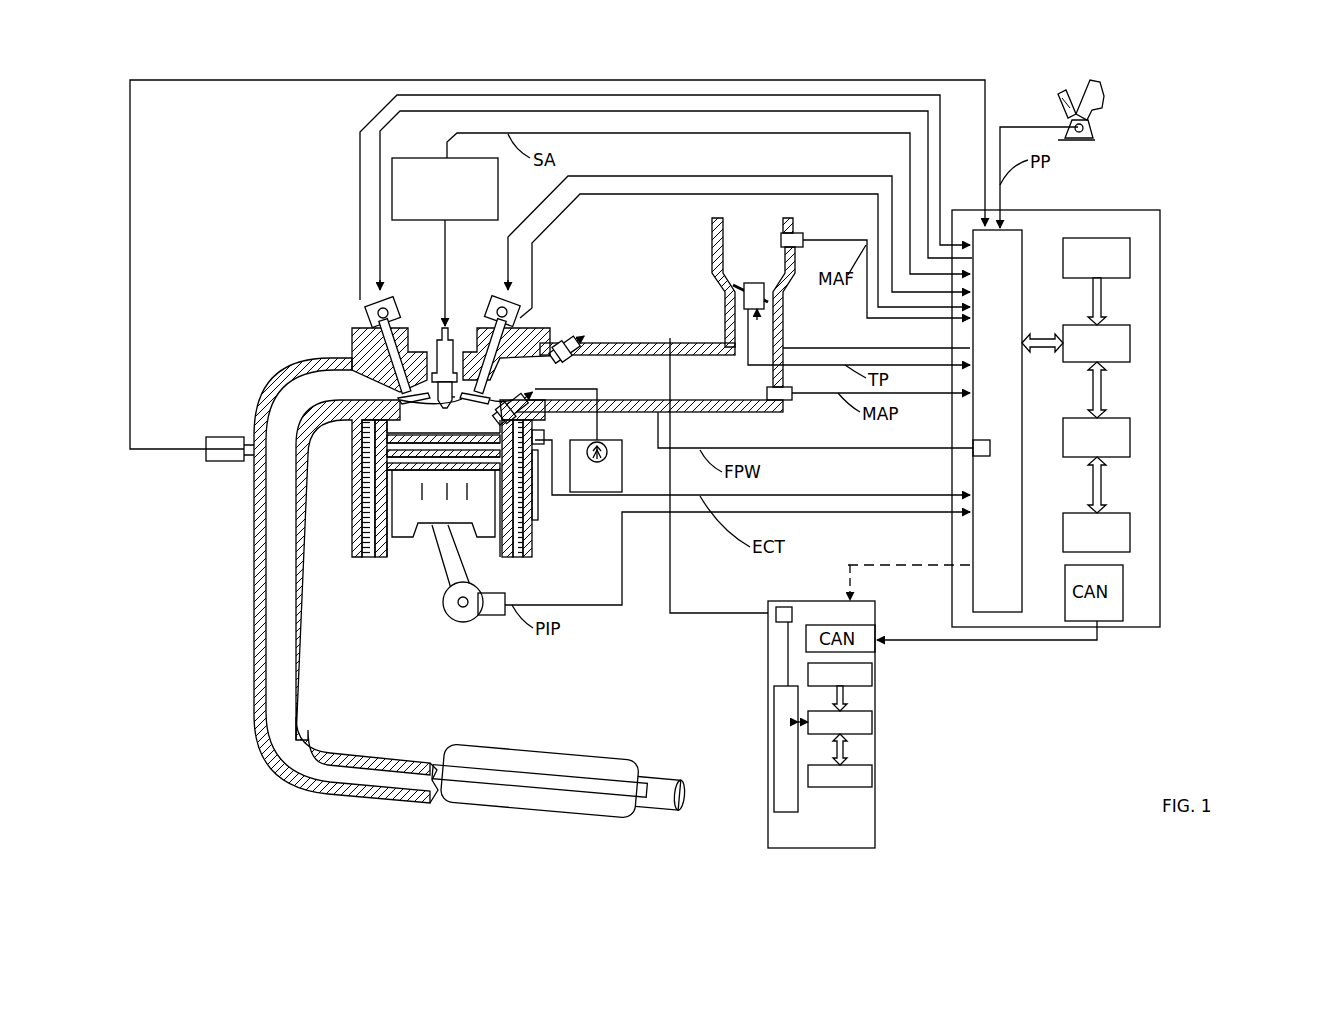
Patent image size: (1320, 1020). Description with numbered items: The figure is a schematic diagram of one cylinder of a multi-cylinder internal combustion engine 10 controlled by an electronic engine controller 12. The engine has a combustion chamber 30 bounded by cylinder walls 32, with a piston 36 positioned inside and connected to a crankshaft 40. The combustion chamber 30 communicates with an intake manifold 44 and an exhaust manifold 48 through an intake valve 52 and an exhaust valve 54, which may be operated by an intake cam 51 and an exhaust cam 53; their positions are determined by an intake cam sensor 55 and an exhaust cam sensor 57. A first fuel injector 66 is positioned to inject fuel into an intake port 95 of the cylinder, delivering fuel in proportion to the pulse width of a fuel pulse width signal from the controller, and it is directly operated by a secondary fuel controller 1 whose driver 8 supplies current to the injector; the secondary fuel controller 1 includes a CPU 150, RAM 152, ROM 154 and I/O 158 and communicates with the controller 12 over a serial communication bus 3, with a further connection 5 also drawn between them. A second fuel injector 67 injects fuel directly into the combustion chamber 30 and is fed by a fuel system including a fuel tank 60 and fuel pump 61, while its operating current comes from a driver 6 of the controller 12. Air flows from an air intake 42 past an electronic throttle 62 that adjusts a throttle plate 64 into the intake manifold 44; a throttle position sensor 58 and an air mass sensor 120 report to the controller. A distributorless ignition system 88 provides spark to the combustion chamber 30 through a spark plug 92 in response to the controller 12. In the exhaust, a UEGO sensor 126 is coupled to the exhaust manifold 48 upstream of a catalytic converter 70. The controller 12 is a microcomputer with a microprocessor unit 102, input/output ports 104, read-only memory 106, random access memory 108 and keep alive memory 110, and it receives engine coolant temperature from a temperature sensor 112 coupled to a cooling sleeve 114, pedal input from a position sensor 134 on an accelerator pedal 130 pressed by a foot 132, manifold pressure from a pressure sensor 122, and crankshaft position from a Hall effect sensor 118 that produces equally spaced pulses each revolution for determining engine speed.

The internal combustion engine 10 is at (288, 285).
The electronic engine controller 12 is at (1160, 212).
The secondary fuel controller 1 is at (875, 848).
The serial communication bus 3 is at (975, 642).
The dashed connection 5 is at (908, 563).
The driver 6 is at (968, 455).
The driver 8 is at (776, 618).
The combustion chamber 30 is at (380, 508).
The cylinder walls 32 is at (385, 560).
The piston 36 is at (420, 540).
The crankshaft 40 is at (452, 618).
The air intake 42 is at (764, 260).
The intake manifold 44 is at (702, 390).
The exhaust manifold 48 is at (334, 395).
The intake cam 51 is at (500, 298).
The intake valve 52 is at (498, 385).
The exhaust cam 53 is at (390, 298).
The exhaust valve 54 is at (360, 370).
The intake cam sensor 55 is at (515, 318).
The exhaust cam sensor 57 is at (368, 308).
The throttle position sensor 58 is at (740, 312).
The fuel tank 60 is at (622, 465).
The fuel pump 61 is at (603, 443).
The electronic throttle 62 is at (768, 293).
The throttle plate 64 is at (744, 292).
The first fuel injector 66 is at (565, 338).
The second fuel injector 67 is at (580, 392).
The catalytic converter 70 is at (462, 752).
The distributorless ignition system 88 is at (400, 158).
The spark plug 92 is at (450, 340).
The intake port 95 is at (492, 398).
The microprocessor unit 102 is at (1130, 344).
The input/output ports 104 is at (1022, 238).
The read-only memory 106 is at (1130, 256).
The random access memory 108 is at (1130, 434).
The keep alive memory 110 is at (1130, 529).
The temperature sensor 112 is at (540, 444).
The cooling sleeve 114 is at (538, 500).
The Hall effect sensor 118 is at (495, 617).
The air mass sensor 120 is at (797, 233).
The pressure sensor 122 is at (788, 400).
The Universal Exhaust Gas Oxygen sensor 126 is at (206, 440).
The accelerator pedal 130 is at (1065, 105).
The foot 132 is at (1105, 98).
The position sensor 134 is at (1090, 127).
The CPU 150 is at (870, 720).
The RAM 152 is at (870, 774).
The ROM 154 is at (870, 672).
The I/O 158 is at (782, 794).